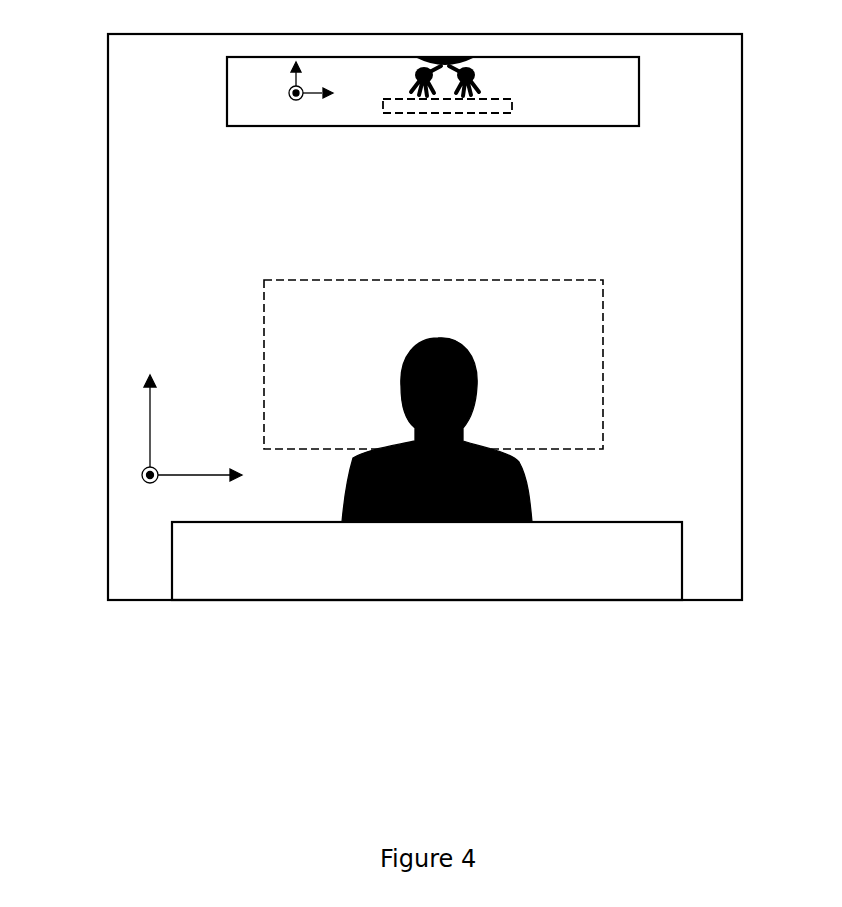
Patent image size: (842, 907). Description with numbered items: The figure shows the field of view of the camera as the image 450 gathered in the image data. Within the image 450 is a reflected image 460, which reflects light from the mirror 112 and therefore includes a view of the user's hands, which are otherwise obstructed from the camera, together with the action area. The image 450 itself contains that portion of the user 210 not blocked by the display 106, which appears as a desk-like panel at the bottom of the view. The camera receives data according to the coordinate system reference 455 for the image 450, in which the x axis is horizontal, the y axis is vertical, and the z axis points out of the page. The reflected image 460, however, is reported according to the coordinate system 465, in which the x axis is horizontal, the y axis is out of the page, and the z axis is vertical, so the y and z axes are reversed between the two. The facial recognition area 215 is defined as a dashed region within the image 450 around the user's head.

The image 450 is at (742, 167).
The reflected image 460 is at (640, 92).
The coordinate system 465 is at (288, 93).
The mirror 112 is at (446, 127).
The facial recognition area 215 is at (604, 328).
The user 210 is at (475, 366).
The display 106 is at (198, 577).
The coordinate system reference 455 is at (142, 475).